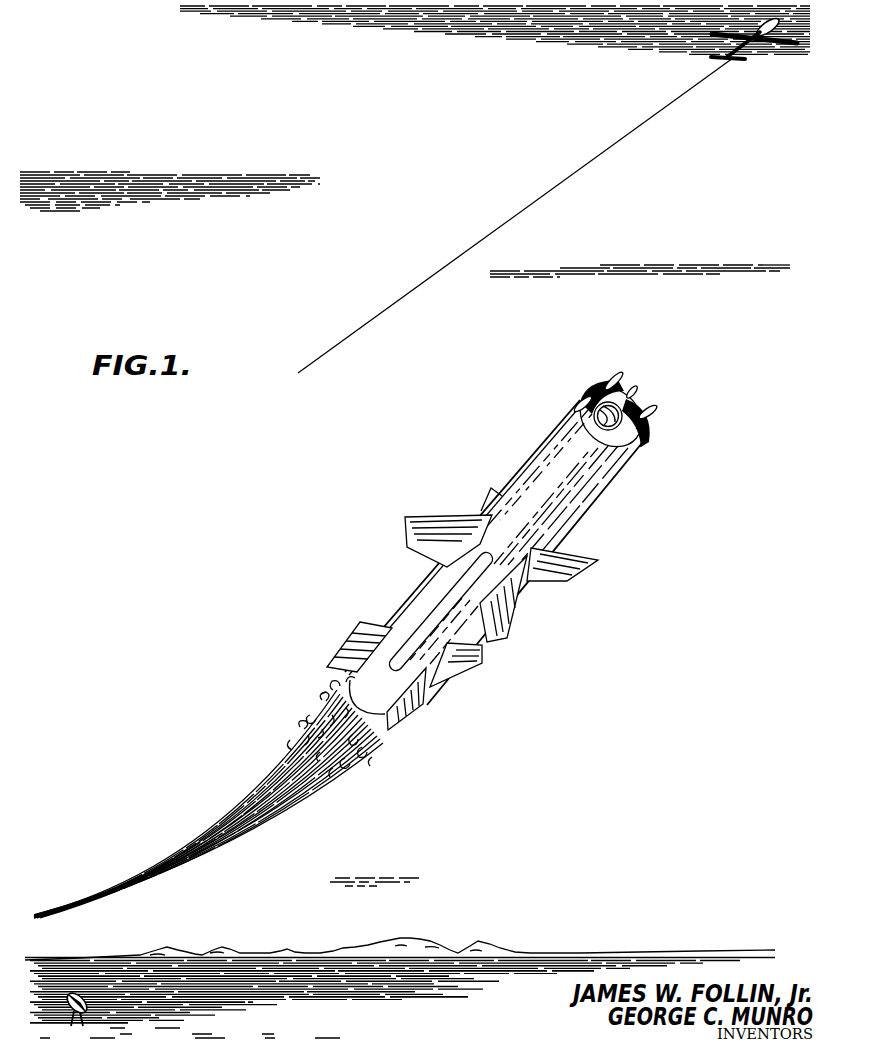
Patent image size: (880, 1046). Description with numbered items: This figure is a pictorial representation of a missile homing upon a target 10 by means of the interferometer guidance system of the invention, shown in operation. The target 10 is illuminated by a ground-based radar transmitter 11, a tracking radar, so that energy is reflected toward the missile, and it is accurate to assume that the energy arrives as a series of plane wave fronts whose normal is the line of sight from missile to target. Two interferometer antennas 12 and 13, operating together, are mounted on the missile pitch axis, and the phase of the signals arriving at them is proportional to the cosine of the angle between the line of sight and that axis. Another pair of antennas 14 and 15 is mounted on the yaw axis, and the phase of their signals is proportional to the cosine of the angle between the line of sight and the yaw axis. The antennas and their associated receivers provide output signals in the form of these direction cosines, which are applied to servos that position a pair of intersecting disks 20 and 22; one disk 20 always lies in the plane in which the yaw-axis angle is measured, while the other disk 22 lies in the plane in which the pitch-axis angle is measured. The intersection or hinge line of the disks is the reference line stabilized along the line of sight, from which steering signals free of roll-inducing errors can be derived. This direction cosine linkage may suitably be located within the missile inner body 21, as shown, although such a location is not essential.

The target 10 is at (746, 63).
The ground-based radar transmitter 11 is at (78, 1016).
The interferometer antenna 12 is at (505, 539).
The interferometer antenna 13 is at (617, 378).
The interferometer antenna 14 is at (588, 398).
The interferometer antenna 15 is at (655, 411).
The missile inner body 21 is at (631, 391).
The intersecting disk 20 is at (597, 416).
The intersecting disk 22 is at (599, 427).